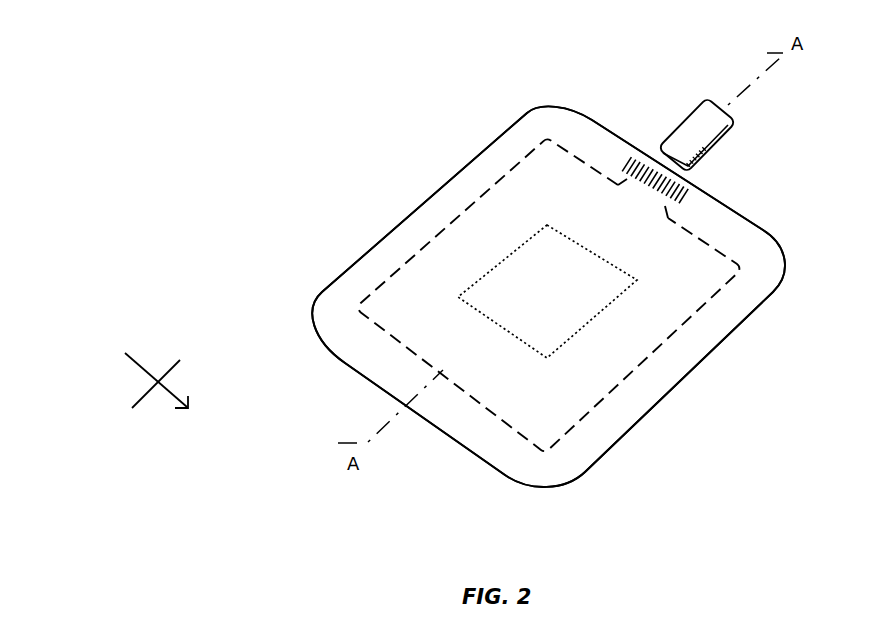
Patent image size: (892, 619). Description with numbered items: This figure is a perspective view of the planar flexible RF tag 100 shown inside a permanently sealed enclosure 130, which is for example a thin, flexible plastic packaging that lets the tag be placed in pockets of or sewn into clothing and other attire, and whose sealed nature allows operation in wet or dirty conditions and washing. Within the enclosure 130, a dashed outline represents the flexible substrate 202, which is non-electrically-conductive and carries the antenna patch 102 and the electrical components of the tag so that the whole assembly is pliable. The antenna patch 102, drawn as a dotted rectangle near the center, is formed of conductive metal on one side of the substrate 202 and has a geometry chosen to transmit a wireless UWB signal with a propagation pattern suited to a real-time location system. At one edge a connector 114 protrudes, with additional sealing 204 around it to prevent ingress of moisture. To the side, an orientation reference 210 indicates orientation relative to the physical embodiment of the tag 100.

The planar flexible RF tag 100 is at (290, 70).
The antenna patch 102 is at (600, 308).
The connector 114 is at (702, 126).
The enclosure 130 is at (332, 290).
The flexible substrate 202 is at (540, 163).
The additional sealing 204 is at (693, 193).
The orientation reference 210 is at (99, 387).